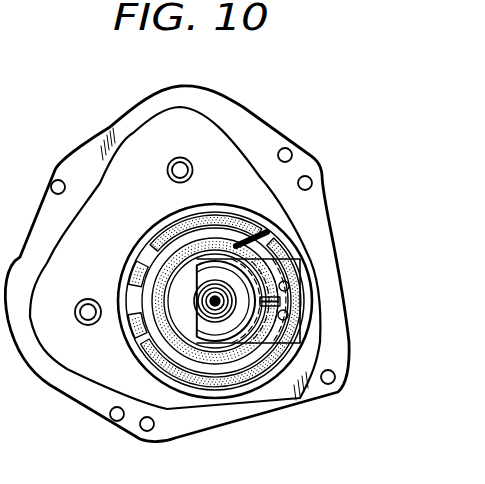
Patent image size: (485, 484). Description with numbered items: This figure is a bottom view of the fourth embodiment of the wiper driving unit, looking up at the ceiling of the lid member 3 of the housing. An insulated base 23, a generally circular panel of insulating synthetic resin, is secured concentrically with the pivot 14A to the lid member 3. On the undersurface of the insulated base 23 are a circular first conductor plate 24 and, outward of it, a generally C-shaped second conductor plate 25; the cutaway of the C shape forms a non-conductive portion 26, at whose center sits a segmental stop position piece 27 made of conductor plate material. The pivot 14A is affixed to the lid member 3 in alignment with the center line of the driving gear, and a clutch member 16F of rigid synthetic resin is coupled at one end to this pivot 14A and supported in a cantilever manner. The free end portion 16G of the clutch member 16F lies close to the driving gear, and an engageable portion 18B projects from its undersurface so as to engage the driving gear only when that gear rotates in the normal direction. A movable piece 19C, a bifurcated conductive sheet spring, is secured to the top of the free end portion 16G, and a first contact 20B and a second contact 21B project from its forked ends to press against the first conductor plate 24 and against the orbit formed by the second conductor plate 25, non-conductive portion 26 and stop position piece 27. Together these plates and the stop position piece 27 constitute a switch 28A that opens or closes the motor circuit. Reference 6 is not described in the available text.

The lid member 3 is at (236, 104).
The motor 6 is at (484, 7).
The pivot 14A is at (205, 303).
The clutch member 16F is at (243, 344).
The free end portion 16G is at (299, 316).
The engageable portion 18B is at (282, 302).
The movable piece 19C is at (283, 253).
The first contact 20B is at (212, 205).
The second contact 21B is at (238, 210).
The insulated base 23 is at (150, 247).
The first conductor plate 24 is at (180, 245).
The second conductor plate 25 is at (148, 232).
The non-conductive portion 26 is at (133, 301).
The stop position piece 27 is at (134, 273).
The switch 28A is at (250, 233).